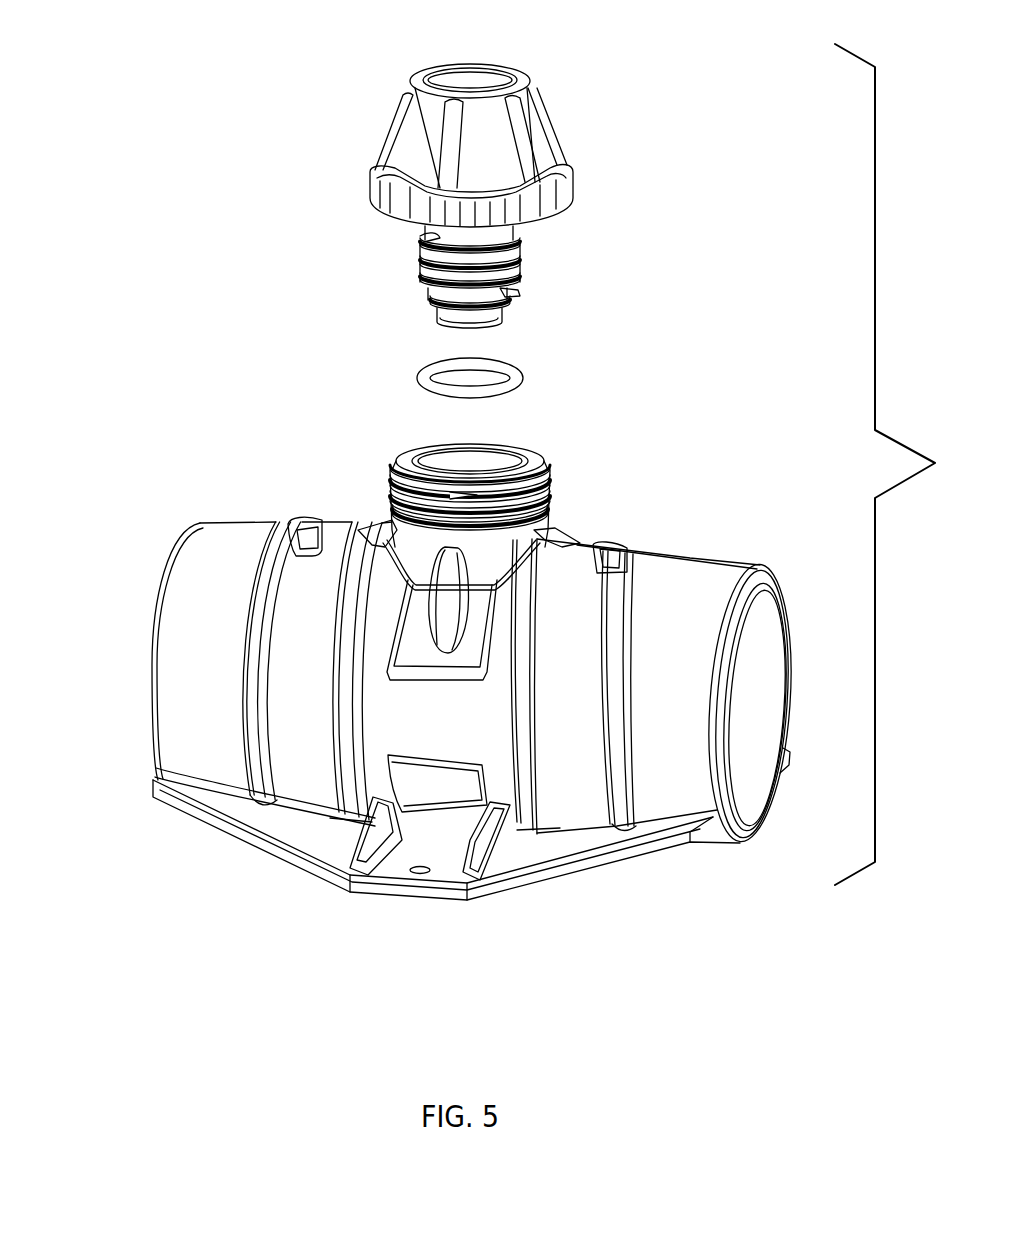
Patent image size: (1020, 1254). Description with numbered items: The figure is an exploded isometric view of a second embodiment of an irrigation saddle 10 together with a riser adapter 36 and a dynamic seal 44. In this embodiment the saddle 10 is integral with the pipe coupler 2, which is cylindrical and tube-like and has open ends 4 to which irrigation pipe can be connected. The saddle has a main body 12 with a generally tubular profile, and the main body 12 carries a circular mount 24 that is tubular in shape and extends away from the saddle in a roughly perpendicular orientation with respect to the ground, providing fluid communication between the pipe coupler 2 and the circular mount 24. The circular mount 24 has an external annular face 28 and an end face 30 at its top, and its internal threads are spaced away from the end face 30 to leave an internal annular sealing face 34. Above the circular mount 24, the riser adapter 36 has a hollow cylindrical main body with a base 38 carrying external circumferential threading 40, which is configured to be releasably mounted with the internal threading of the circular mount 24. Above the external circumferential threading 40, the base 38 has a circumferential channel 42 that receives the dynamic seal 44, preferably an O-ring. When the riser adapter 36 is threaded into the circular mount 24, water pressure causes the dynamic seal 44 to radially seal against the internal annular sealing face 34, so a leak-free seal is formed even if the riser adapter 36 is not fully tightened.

The pipe coupler 2 is at (131, 534).
The open ends 4 is at (144, 660).
The saddle 10 is at (591, 504).
The main body 12 is at (422, 541).
The circular mount 24 is at (384, 437).
The external annular face 28 is at (541, 480).
The end face 30 is at (536, 462).
The internal annular sealing face 34 is at (499, 467).
The riser adapter 36 is at (612, 180).
The base 38 is at (422, 298).
The external circumferential threading 40 is at (422, 250).
The circumferential channel 42 is at (423, 231).
The dynamic seal 44 is at (520, 366).